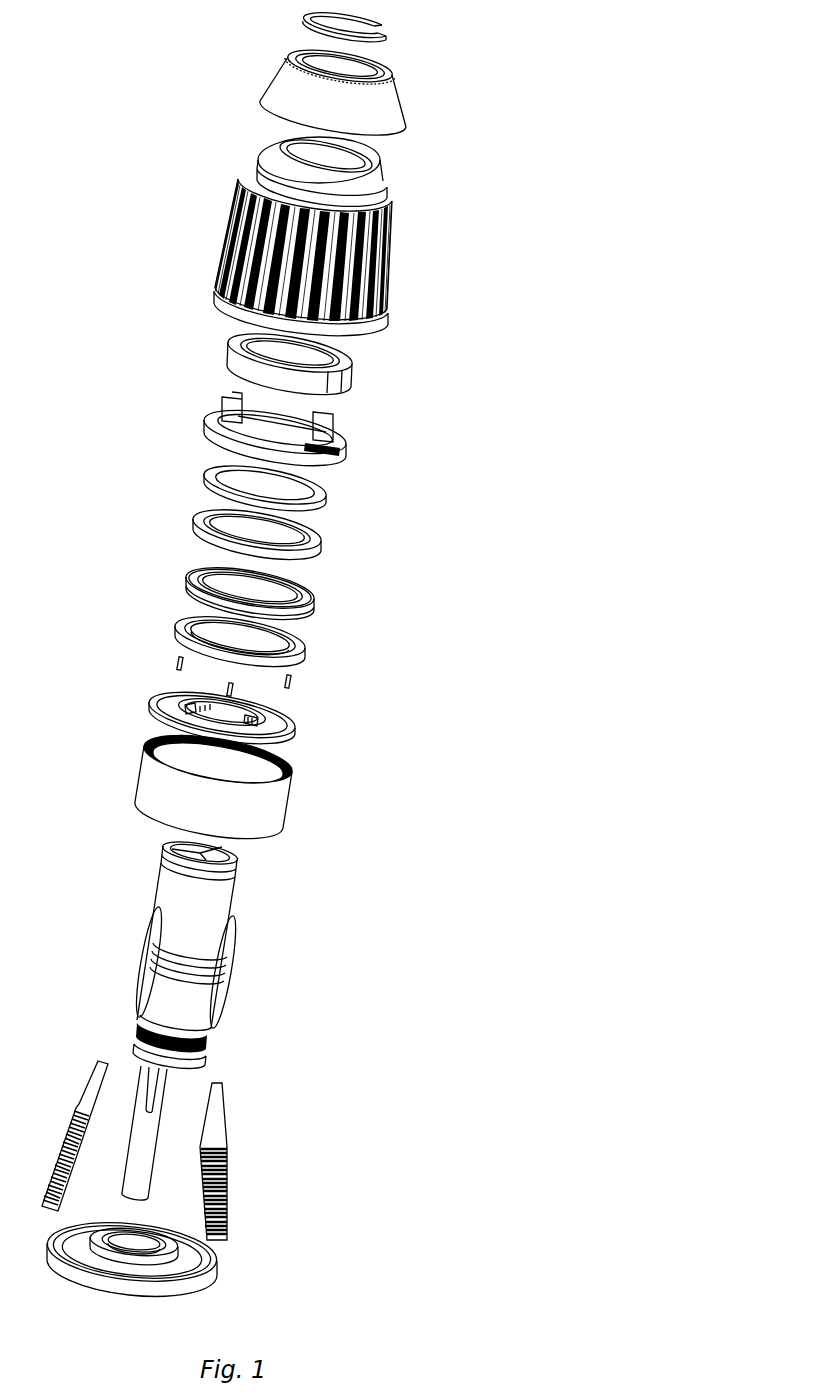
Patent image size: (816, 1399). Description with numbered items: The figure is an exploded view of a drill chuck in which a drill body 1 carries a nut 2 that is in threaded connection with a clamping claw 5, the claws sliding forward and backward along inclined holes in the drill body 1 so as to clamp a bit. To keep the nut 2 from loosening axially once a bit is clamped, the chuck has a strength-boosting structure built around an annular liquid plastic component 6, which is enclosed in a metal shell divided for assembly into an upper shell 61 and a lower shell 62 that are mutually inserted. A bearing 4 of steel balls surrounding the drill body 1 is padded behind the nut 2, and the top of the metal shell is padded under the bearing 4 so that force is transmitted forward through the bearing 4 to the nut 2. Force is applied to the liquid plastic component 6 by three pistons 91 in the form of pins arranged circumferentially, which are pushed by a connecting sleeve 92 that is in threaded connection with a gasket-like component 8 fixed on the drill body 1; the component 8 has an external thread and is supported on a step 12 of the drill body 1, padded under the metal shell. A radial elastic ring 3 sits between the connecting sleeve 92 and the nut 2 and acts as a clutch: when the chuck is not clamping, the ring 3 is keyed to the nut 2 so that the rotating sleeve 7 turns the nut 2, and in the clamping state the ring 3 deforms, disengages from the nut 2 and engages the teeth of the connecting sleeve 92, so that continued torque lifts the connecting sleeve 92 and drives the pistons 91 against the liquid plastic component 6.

The drill body 1 is at (265, 1007).
The step 12 is at (207, 1003).
The nut 2 is at (318, 366).
The ring 3 is at (333, 424).
The bearing 4 is at (313, 493).
The clamping claw 5 is at (205, 1143).
The liquid plastic component 6 is at (316, 599).
The upper shell 61 is at (310, 535).
The lower shell 62 is at (308, 649).
The rotating sleeve 7 is at (372, 247).
The component 8 is at (294, 740).
The pistons 91 is at (296, 679).
The connecting sleeve 92 is at (272, 800).